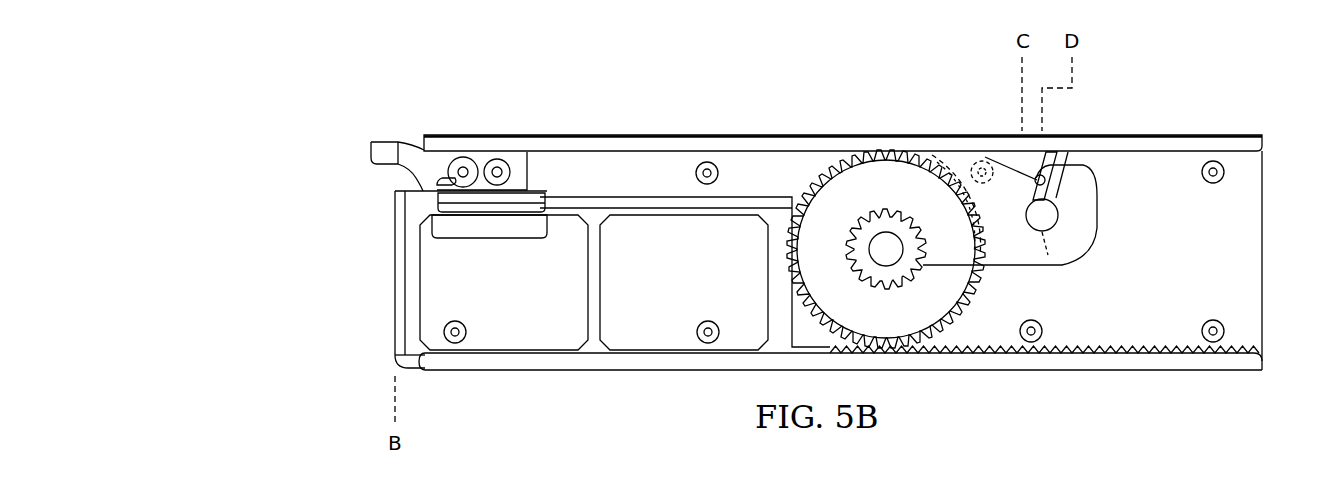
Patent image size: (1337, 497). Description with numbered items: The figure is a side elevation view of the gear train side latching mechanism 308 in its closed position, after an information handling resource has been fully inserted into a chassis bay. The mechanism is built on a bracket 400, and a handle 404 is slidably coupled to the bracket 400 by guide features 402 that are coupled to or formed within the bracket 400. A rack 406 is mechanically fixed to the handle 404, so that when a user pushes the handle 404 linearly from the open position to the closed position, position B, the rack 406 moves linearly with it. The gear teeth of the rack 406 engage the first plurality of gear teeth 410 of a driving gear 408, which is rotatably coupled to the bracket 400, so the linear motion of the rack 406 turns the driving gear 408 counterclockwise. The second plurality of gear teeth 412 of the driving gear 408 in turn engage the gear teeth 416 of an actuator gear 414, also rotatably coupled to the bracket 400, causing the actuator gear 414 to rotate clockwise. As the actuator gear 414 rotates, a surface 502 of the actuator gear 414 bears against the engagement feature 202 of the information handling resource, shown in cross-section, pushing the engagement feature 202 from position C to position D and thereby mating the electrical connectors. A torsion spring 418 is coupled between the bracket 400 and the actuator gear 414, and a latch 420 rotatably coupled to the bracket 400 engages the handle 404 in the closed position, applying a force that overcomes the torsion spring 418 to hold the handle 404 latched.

The gear train side latching mechanism 308 is at (418, 86).
The bracket 400 is at (1263, 258).
The guide features 402 is at (528, 192).
The handle 404 is at (395, 276).
The rack 406 is at (1092, 348).
The driving gear 408 is at (808, 252).
The first plurality of gear teeth 410 is at (812, 152).
The second plurality of gear teeth 412 is at (815, 190).
The actuator gear 414 is at (1097, 232).
The gear teeth 416 is at (913, 190).
The torsion spring 418 is at (1037, 176).
The latch 420 is at (372, 147).
The surface 502 is at (1078, 186).
The engagement feature 202 is at (1062, 176).